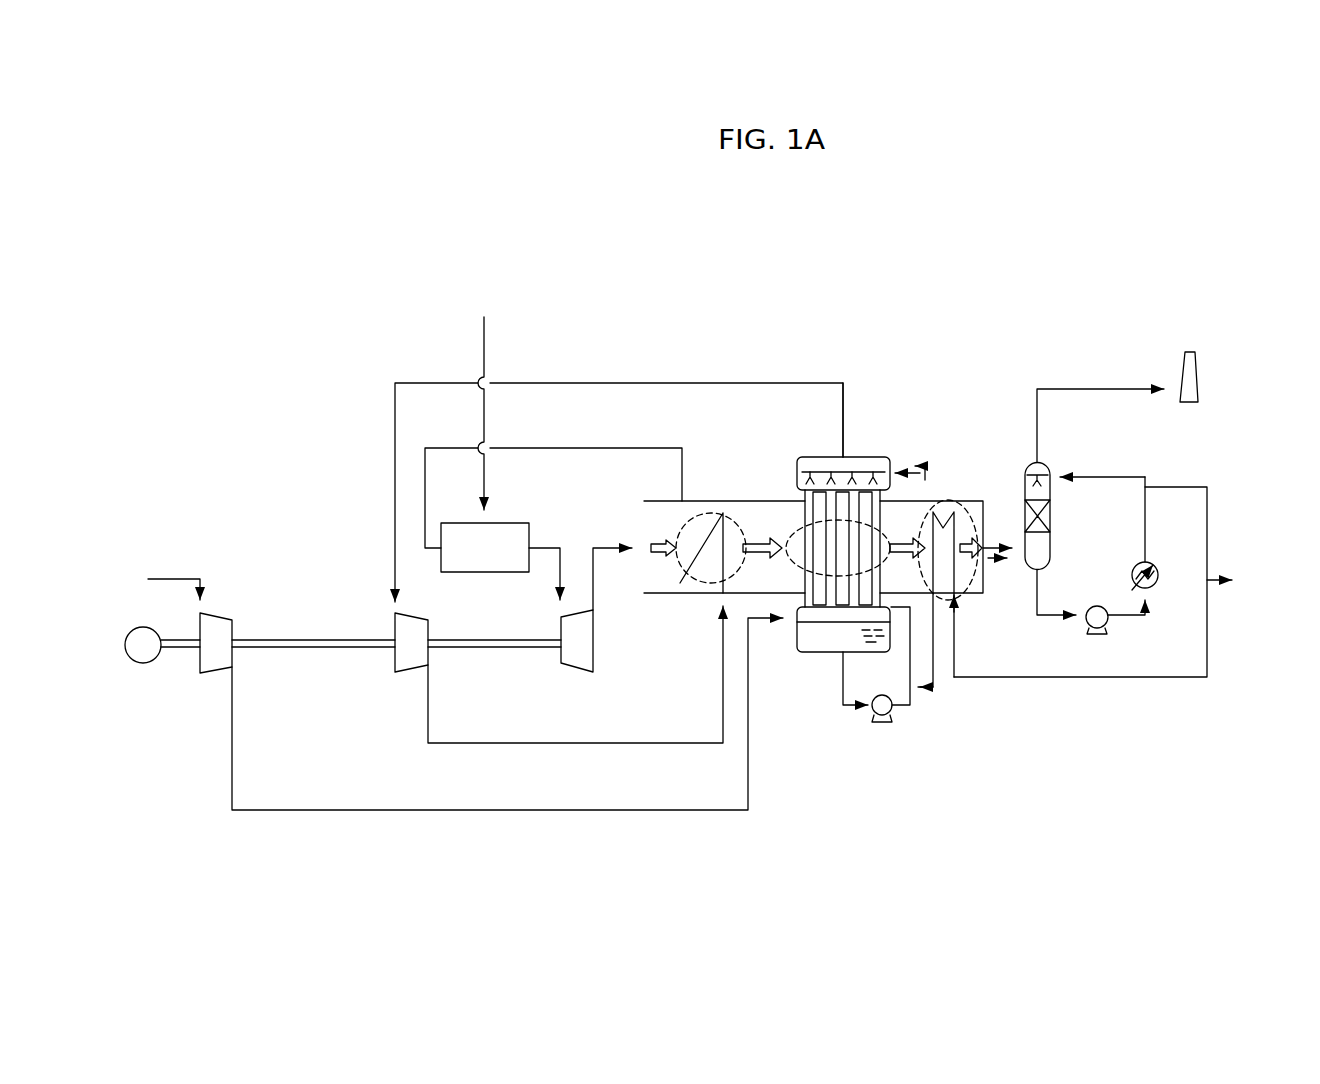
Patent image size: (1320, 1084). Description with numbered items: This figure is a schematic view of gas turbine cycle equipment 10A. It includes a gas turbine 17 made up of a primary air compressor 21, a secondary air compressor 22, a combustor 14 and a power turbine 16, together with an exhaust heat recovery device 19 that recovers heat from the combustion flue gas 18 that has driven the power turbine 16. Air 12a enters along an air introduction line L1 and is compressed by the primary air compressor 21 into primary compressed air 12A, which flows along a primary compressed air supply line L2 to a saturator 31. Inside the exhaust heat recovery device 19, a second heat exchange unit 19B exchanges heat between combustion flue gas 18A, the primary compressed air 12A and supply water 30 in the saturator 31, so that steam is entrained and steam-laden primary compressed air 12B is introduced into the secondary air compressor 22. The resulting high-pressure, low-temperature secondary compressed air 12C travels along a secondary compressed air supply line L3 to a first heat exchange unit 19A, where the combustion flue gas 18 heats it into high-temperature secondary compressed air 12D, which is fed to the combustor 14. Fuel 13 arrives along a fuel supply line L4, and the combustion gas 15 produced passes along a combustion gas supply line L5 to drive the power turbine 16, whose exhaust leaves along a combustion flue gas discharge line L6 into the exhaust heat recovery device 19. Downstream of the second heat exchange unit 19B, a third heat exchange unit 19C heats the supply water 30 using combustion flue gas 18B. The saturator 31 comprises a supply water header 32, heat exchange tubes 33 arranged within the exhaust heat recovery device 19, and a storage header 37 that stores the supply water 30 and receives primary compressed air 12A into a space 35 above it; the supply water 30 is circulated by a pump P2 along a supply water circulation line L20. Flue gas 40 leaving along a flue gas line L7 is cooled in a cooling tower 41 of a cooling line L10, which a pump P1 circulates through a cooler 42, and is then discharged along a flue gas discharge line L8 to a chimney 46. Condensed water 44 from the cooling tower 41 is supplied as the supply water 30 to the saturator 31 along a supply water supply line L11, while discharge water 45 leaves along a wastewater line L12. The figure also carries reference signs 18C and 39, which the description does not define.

The gas turbine cycle equipment 10A is at (749, 229).
The air 12a is at (178, 567).
The primary compressed air 12A is at (317, 822).
The steam-entraining primary compressed air 12B is at (735, 370).
The secondary compressed air 12C is at (500, 755).
The high-temperature secondary compressed air 12D is at (508, 433).
The fuel 13 is at (473, 340).
The combustor 14 is at (503, 522).
The combustion gas 15 is at (545, 537).
The power turbine 16 is at (595, 660).
The gas turbine 17 is at (356, 496).
The combustion flue gas 18 is at (613, 537).
The combustion flue gas after first heat exchange 18A is at (758, 558).
The combustion flue gas after second heat exchange 18B is at (907, 553).
The exhaust gas flow after filter 18C is at (1036, 515).
The exhaust heat recovery device 19 is at (724, 497).
The first heat exchange unit 19A is at (700, 585).
The second heat exchange unit 19B is at (800, 522).
The third heat exchange unit 19C is at (958, 595).
The primary air compressor 21 is at (200, 660).
The secondary air compressor 22 is at (392, 665).
The supply water 30 is at (1118, 693).
The saturator 31 is at (863, 446).
The supply water header 32 is at (842, 455).
The heat exchange tubes 33 is at (945, 510).
The space 35 is at (847, 622).
The storage header 37 is at (820, 652).
The spray nozzle 39 is at (888, 469).
The flue gas 40 is at (1080, 375).
The cooling tower 41 is at (1052, 464).
The cooler 42 is at (1134, 566).
The condensed water 44 is at (1135, 627).
The discharge water 45 is at (1240, 573).
The chimney 46 is at (1190, 350).
The air introduction line L1 is at (205, 579).
The primary compressed air supply line L2 is at (395, 811).
The secondary compressed air supply line L3 is at (658, 744).
The fuel supply line L4 is at (486, 327).
The combustion gas supply line L5 is at (558, 550).
The combustion flue gas discharge line L6 is at (631, 550).
The flue gas line L7 is at (1010, 546).
The flue gas discharge line L8 is at (1125, 388).
The cooling line L10 is at (1145, 474).
The supply water supply line L11 is at (1208, 652).
The wastewater line L12 is at (1210, 565).
The supply water circulation line L20 is at (895, 710).
The pump P1 is at (1090, 627).
The pump P2 is at (872, 713).